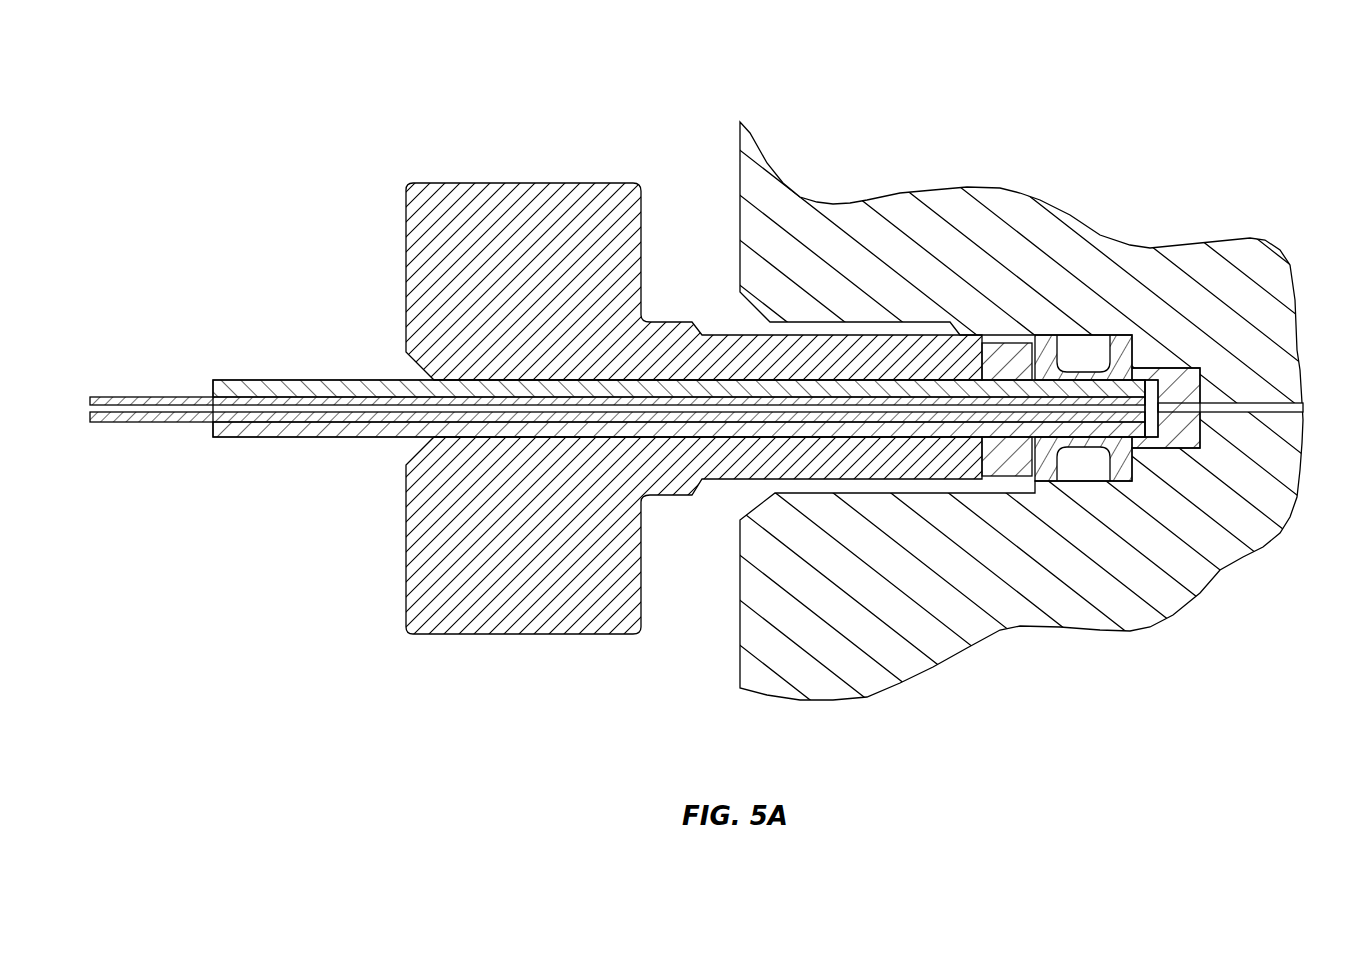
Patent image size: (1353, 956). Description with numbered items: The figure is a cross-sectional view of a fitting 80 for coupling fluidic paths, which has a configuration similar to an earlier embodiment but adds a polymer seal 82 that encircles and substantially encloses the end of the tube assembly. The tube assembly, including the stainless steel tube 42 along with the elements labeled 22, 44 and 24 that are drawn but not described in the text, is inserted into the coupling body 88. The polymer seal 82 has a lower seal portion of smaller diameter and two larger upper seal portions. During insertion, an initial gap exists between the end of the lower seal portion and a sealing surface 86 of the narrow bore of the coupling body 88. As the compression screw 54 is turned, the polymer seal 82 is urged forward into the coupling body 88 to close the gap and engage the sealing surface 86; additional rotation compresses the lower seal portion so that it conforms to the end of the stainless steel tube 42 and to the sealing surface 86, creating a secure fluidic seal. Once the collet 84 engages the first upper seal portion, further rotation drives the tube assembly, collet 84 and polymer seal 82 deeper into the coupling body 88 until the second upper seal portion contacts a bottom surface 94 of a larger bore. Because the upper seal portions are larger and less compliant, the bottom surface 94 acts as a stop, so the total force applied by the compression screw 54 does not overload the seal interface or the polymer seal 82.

The cable 22 is at (90, 405).
The cable end fitting 24 is at (1303, 410).
The stainless steel tube 42 is at (186, 424).
The sleeve 44 is at (360, 378).
The compression screw 54 is at (405, 232).
The fitting 80 is at (670, 96).
The polymer seal 82 is at (1077, 372).
The collet 84 is at (1005, 356).
The sealing surface 86 is at (1194, 440).
The coupling body 88 is at (929, 263).
The bottom surface 94 is at (1126, 356).